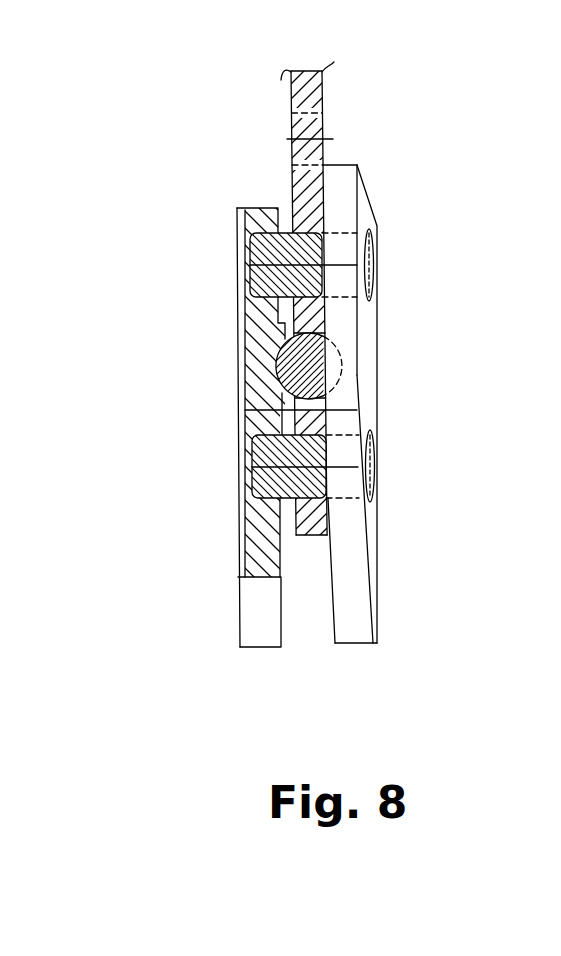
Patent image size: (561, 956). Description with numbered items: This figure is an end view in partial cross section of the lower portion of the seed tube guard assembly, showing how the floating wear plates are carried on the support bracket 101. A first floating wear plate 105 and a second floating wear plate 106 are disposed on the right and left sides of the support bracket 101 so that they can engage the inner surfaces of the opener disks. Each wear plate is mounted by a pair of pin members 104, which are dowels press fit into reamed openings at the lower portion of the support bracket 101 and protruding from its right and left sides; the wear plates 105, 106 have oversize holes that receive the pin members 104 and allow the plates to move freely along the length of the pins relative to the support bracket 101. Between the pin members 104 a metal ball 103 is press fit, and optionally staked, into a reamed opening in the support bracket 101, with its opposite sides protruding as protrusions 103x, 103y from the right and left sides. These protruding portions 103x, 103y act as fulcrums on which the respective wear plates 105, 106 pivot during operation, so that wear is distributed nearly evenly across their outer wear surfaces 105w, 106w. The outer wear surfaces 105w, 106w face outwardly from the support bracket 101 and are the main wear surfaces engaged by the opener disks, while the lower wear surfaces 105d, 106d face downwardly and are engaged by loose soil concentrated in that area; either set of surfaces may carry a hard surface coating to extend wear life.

The support bracket 101 is at (322, 100).
The metal ball 103 is at (279, 393).
The protrusion 103x is at (290, 372).
The protrusion 103y is at (343, 352).
The pin member 104 is at (258, 252).
The first floating wear plate 105 is at (253, 208).
The outer wear surface 105w is at (237, 567).
The lower wear surface 105d is at (258, 647).
The second floating wear plate 106 is at (417, 437).
The outer wear surface 106w is at (377, 527).
The lower wear surface 106d is at (362, 645).